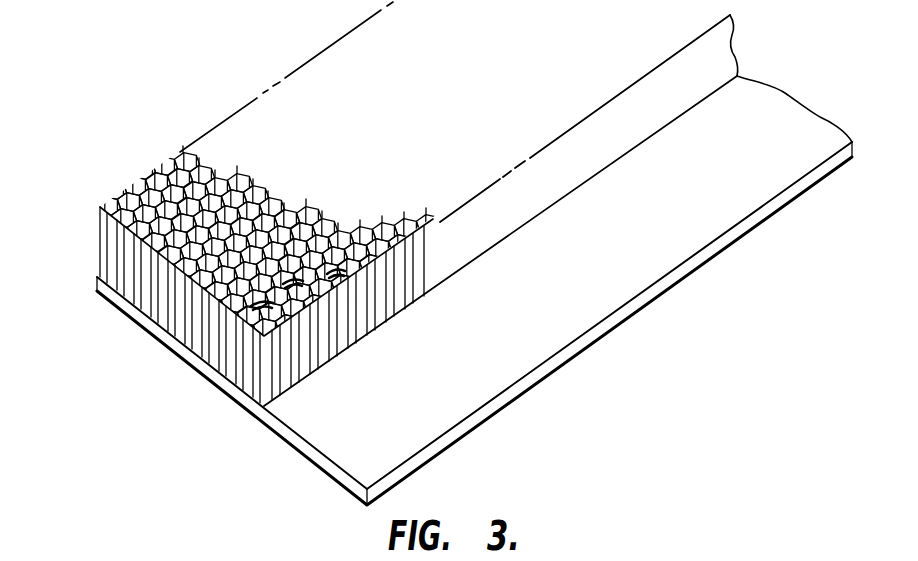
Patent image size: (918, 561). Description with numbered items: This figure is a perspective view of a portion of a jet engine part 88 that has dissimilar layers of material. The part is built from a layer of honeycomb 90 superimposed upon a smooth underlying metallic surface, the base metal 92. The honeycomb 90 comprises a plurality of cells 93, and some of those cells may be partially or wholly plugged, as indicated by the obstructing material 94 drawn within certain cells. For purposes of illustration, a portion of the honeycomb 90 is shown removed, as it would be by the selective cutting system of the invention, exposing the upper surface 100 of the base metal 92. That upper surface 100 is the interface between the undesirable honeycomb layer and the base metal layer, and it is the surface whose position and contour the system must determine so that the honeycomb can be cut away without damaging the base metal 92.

The jet engine part 88 is at (393, 209).
The layer of honeycomb 90 is at (220, 258).
The base metal 92 is at (437, 415).
The cells 93 is at (270, 282).
The plugging material 94 is at (258, 305).
The upper surface of base metal 100 is at (683, 226).